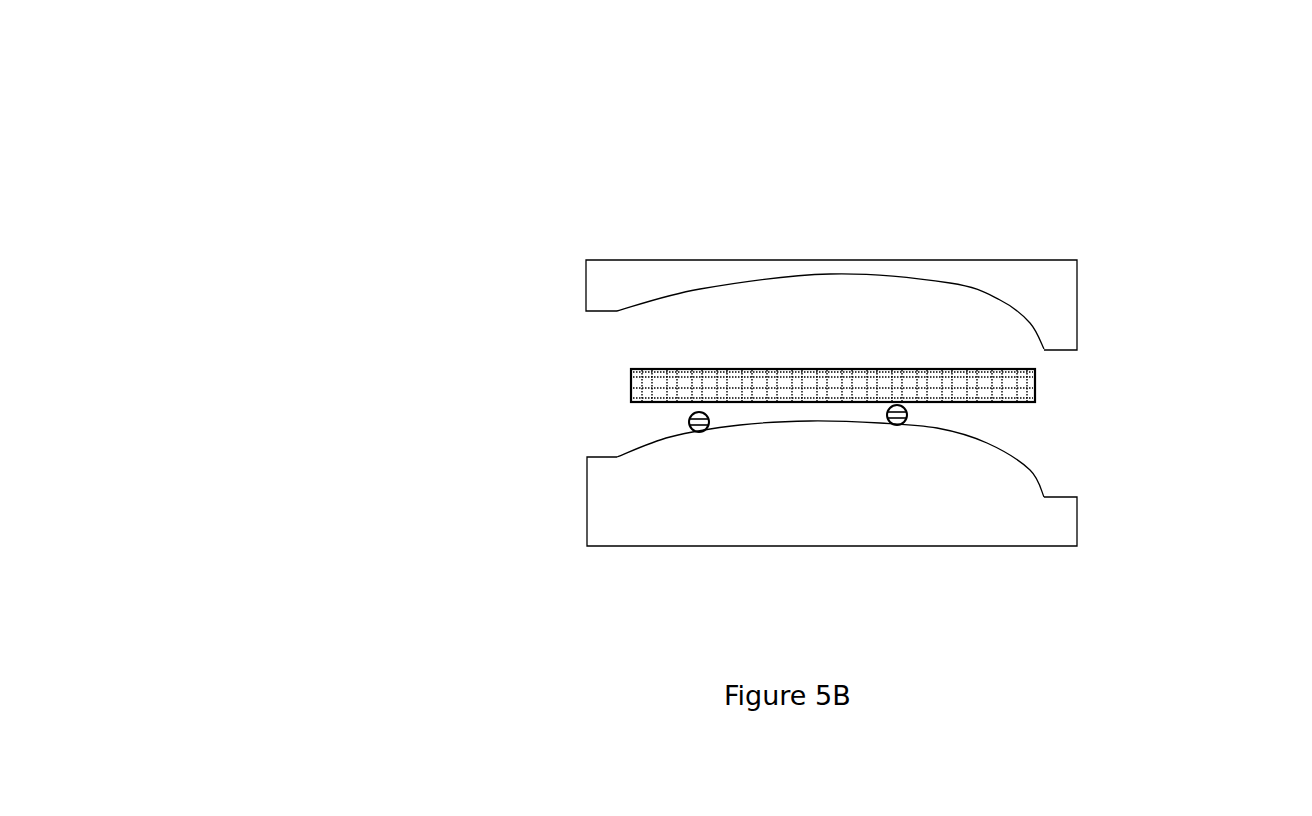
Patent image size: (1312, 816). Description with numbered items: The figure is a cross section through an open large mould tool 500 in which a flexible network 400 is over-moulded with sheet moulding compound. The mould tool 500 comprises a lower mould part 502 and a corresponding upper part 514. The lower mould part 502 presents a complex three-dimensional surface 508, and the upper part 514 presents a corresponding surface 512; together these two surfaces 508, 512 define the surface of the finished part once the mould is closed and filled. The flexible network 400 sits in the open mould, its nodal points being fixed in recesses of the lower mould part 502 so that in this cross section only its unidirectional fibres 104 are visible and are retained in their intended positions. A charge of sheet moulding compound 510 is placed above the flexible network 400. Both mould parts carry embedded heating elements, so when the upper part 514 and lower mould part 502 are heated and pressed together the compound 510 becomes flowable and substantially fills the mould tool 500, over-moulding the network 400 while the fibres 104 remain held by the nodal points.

The large mould tool 500 is at (326, 208).
The upper part 514 is at (631, 275).
The surface 512 is at (888, 280).
The sheet moulding compound 510 is at (1037, 385).
The flexible network 400 is at (689, 419).
The unidirectional fibres 104 is at (906, 423).
The lower mould part 502 is at (587, 497).
The three-dimensional surface 508 is at (1035, 470).